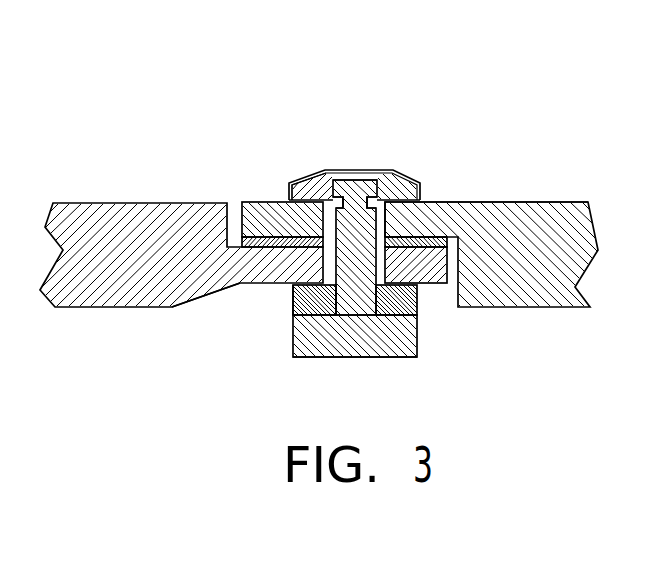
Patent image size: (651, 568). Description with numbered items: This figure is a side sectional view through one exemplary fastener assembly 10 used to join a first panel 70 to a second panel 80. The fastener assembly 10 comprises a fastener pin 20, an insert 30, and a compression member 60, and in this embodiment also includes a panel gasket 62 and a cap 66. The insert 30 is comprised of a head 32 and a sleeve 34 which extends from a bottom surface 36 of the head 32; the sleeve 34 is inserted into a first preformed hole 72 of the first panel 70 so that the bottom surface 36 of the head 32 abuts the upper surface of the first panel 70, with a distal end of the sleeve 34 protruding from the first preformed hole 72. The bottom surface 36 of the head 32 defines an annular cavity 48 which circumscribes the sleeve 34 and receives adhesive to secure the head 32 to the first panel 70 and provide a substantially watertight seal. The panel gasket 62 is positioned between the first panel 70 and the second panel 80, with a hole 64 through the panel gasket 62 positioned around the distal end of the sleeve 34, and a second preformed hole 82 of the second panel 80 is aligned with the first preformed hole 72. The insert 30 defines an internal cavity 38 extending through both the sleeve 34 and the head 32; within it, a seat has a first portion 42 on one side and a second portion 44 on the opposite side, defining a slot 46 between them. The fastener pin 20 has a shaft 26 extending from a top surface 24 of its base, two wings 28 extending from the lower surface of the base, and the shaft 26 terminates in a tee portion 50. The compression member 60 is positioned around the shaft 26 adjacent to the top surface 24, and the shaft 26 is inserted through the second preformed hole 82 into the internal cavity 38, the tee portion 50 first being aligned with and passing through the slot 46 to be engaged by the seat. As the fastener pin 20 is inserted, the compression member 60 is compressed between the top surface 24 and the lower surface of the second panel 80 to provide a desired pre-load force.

The fastener assembly 10 is at (224, 73).
The fastener pin 20 is at (350, 358).
The top surface 24 is at (417, 313).
The shaft 26 is at (417, 302).
The wings 28 is at (307, 358).
The insert 30 is at (289, 195).
The head 32 is at (418, 215).
The sleeve 34 is at (400, 265).
The bottom surface 36 is at (405, 232).
The internal cavity 38 is at (482, 216).
The first portion 42 is at (312, 177).
The second portion 44 is at (385, 178).
The slot 46 is at (340, 179).
The annular cavity 48 is at (296, 188).
The tee portion 50 is at (356, 178).
The compression member 60 is at (293, 303).
The panel gasket 62 is at (238, 242).
The hole 64 is at (260, 287).
The cap 66 is at (406, 180).
The first panel 70 is at (563, 201).
The first preformed hole 72 is at (300, 212).
The second panel 80 is at (147, 308).
The second preformed hole 82 is at (450, 286).